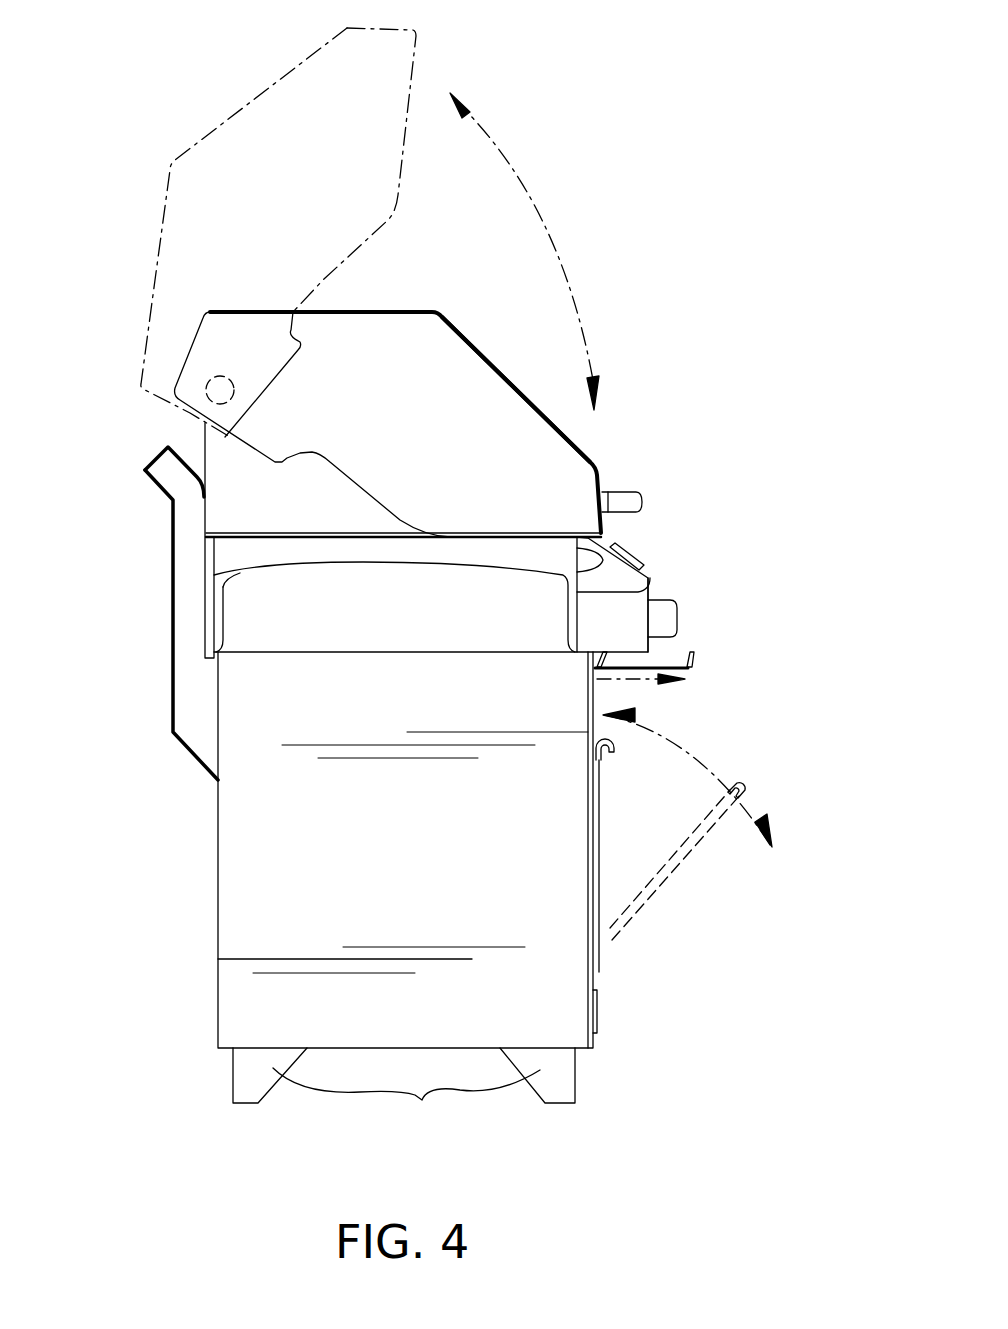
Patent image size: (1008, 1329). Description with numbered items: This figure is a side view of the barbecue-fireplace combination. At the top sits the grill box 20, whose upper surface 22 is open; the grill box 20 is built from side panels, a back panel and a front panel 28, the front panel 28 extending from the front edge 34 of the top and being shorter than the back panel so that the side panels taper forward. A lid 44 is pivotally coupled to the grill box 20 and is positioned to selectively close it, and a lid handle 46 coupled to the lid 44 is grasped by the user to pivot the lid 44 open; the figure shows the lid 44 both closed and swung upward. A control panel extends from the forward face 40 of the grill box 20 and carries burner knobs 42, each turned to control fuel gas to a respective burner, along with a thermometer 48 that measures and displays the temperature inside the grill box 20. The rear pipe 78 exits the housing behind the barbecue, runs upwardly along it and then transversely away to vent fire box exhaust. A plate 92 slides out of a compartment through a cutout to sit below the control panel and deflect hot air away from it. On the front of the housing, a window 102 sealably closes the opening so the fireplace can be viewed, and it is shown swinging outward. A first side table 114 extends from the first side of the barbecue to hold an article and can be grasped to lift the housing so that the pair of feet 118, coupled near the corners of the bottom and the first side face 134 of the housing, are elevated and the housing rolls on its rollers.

The grill box 20 is at (253, 523).
The upper surface 22 is at (432, 397).
The front panel 28 is at (579, 650).
The front edge 34 is at (655, 603).
The forward face 40 is at (650, 580).
The burner knob 42 is at (678, 622).
The lid 44 is at (520, 385).
The lid handle 46 is at (620, 492).
The thermometer 48 is at (617, 545).
The rear pipe 78 is at (185, 577).
The plate 92 is at (673, 660).
The window 102 is at (600, 820).
The first side table 114 is at (293, 558).
The feet 118 is at (404, 1097).
The first side face 134 is at (263, 827).